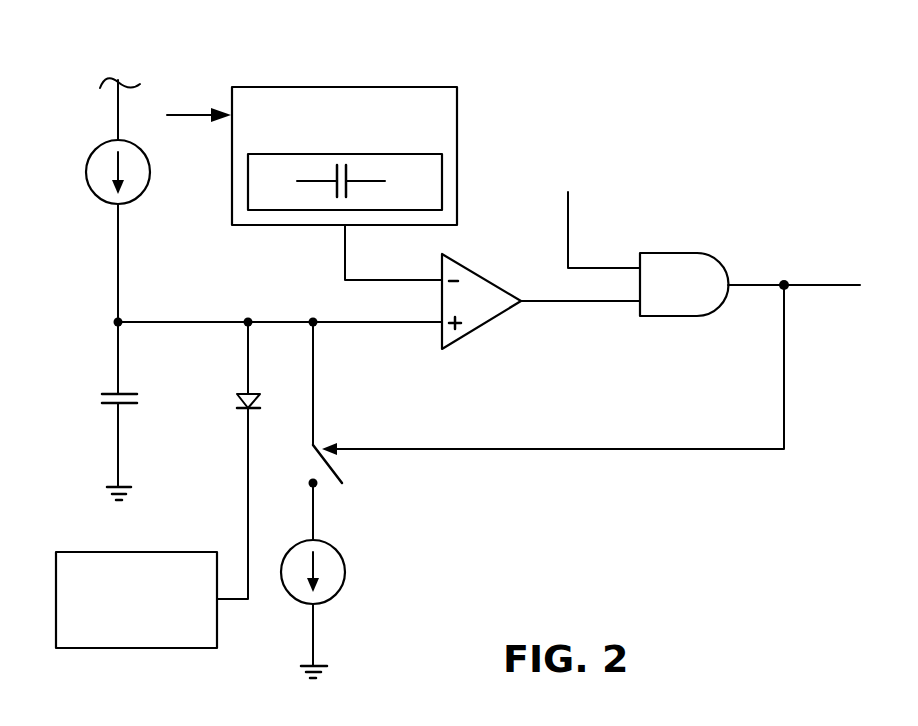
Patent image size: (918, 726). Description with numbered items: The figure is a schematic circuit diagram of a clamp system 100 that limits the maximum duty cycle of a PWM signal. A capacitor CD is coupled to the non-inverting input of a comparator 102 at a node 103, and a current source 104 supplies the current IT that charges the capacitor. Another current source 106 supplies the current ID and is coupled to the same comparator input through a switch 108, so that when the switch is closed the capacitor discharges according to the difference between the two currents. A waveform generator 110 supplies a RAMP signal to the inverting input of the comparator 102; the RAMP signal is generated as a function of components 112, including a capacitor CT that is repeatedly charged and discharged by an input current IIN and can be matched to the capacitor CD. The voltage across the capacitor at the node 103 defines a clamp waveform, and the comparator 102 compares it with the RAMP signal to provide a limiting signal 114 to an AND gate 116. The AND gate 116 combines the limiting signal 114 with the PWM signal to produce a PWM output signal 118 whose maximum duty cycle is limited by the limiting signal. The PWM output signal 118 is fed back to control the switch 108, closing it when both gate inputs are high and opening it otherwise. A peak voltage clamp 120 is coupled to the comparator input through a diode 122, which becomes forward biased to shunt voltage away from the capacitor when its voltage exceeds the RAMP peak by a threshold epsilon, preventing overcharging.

The clamp system 100 is at (663, 84).
The comparator 102 is at (460, 338).
The node 103 is at (195, 322).
The current source 104 is at (95, 195).
The current source 106 is at (336, 595).
The switch 108 is at (343, 426).
The waveform generator 110 is at (346, 87).
The components 112 is at (442, 168).
The limiting signal 114 is at (568, 301).
The AND gate 116 is at (683, 316).
The PWM output signal 118 is at (748, 285).
The peak voltage clamp 120 is at (103, 552).
The diode 122 is at (225, 408).